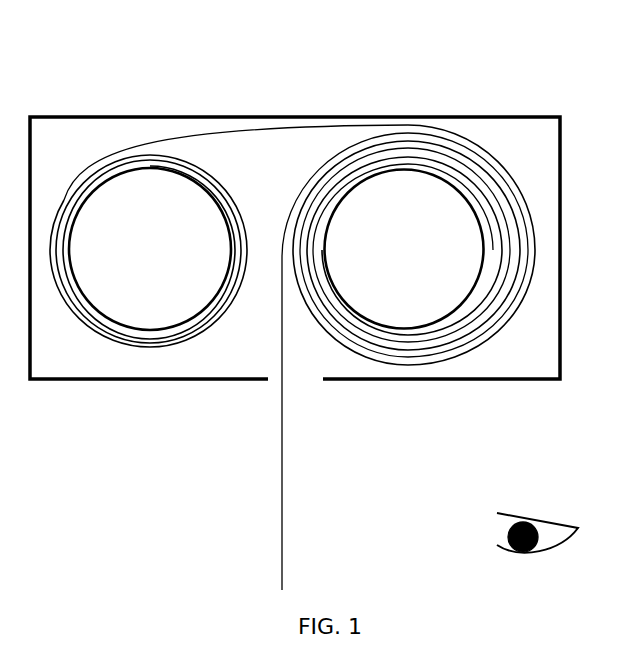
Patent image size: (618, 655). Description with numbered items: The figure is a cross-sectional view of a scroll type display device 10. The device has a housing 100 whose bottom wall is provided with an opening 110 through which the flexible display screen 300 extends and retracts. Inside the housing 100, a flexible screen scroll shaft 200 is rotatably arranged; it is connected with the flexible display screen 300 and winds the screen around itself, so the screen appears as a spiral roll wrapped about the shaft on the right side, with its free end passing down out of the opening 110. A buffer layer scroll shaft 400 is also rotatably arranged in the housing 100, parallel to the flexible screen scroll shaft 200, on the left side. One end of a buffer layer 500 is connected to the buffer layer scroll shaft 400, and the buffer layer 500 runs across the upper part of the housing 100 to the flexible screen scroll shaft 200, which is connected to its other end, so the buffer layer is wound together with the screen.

The display device 10 is at (145, 54).
The housing 100 is at (95, 116).
The opening 110 is at (261, 381).
The flexible screen scroll shaft 200 is at (415, 167).
The flexible display screen 300 is at (346, 145).
The buffer layer scroll shaft 400 is at (150, 167).
The buffer layer 500 is at (256, 150).